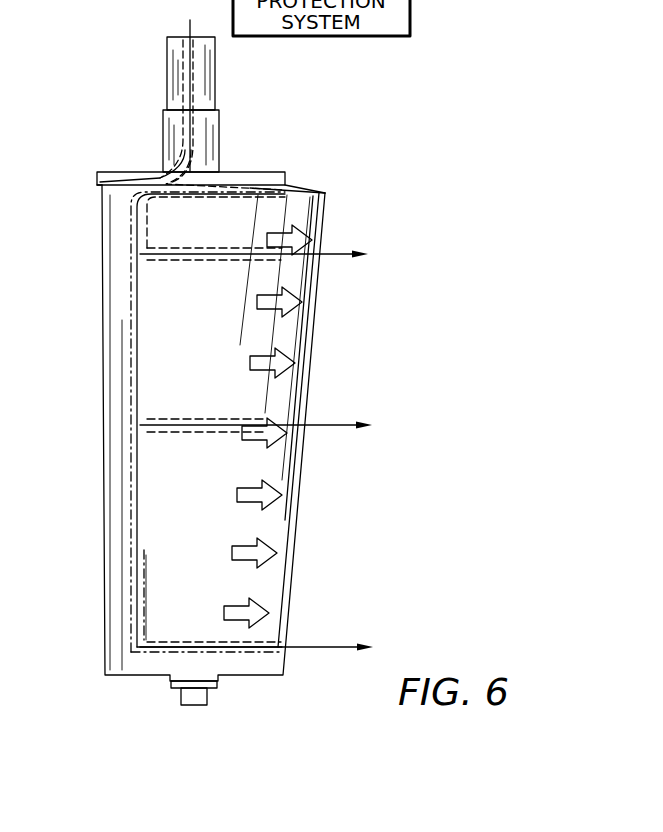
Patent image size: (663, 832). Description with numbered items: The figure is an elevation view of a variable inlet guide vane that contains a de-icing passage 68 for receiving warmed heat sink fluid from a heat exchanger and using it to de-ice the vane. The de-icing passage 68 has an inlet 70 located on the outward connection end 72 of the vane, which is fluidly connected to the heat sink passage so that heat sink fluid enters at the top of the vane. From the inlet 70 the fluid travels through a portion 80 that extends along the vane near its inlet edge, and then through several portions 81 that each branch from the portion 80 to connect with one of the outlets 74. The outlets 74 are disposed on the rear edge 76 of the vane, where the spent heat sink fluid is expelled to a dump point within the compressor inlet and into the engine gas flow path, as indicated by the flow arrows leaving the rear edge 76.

The de-icing passage 68 is at (123, 208).
The inlet 70 is at (160, 37).
The outward connection end 72 is at (90, 26).
The outlets 74 is at (329, 243).
The rear edge 76 is at (315, 516).
The portion 80 is at (120, 543).
The portions 81 is at (207, 237).